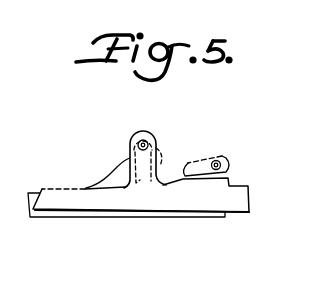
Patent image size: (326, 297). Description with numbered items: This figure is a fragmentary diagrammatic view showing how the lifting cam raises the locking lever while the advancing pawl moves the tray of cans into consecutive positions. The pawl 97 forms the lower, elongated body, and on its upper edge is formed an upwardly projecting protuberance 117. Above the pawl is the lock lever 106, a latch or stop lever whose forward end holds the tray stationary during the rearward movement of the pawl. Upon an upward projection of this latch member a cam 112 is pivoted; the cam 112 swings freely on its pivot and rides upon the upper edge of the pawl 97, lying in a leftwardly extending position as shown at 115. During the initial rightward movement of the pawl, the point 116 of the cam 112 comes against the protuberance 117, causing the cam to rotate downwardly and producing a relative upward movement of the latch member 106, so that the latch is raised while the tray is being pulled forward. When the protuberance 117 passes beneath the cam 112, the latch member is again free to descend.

The pawl 97 is at (73, 218).
The lock lever 106 is at (153, 207).
The cam 112 is at (136, 156).
The leftwardly extending position of the cam 115 is at (228, 158).
The point of the cam 116 is at (176, 139).
The protuberance 117 is at (117, 177).